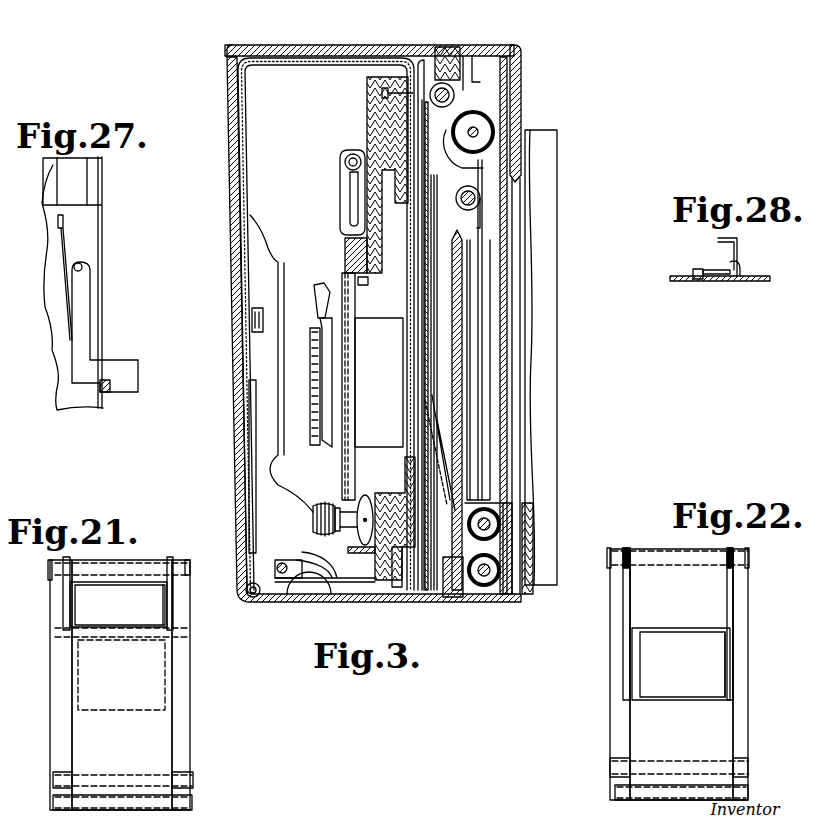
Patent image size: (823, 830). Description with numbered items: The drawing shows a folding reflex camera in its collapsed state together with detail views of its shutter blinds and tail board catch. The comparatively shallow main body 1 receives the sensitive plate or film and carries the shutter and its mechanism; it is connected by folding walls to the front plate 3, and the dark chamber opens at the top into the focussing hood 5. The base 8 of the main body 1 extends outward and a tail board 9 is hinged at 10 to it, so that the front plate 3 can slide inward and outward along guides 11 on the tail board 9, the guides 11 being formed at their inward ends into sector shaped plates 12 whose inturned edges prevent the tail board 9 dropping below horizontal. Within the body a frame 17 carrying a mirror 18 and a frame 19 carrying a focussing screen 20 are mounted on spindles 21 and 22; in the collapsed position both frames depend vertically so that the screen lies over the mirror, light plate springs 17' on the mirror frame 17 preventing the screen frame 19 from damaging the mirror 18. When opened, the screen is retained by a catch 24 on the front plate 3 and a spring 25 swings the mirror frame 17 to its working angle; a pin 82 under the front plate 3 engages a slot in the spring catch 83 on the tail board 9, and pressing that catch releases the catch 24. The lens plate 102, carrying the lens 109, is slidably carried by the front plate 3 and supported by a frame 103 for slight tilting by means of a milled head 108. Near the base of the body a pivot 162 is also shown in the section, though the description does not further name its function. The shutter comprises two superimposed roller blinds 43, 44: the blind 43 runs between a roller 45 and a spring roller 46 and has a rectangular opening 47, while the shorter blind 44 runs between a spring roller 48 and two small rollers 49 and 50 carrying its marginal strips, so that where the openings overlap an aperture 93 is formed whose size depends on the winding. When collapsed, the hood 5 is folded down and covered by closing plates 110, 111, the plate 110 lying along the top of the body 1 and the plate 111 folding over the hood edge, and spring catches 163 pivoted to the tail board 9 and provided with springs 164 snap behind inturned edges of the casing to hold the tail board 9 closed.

In FIG. 3, the main body 1 is at (503, 44).
In FIG. 3, the front plate 3 is at (367, 103).
In FIG. 3, the focussing hood 5 is at (250, 152).
In FIG. 3, the base 8 is at (347, 594).
In FIG. 3, the tail board 9 is at (245, 374).
In FIG. 27, the tail board 9 is at (62, 355).
In FIG. 28, the tail board 9 is at (697, 282).
In FIG. 3, the hinge 10 is at (244, 582).
In FIG. 3, the guides 11 is at (252, 302).
In FIG. 27, the guides 11 is at (102, 165).
In FIG. 28, the guides 11 is at (739, 248).
In FIG. 3, the sector shaped plates 12 is at (270, 520).
In FIG. 3, the mirror frame 17 is at (542, 330).
In FIG. 3, the light plate springs 17' is at (522, 452).
In FIG. 3, the mirror 18 is at (464, 278).
In FIG. 3, the screen frame 19 is at (443, 258).
In FIG. 3, the focussing screen 20 is at (445, 340).
In FIG. 3, the mirror spindle 21 is at (482, 195).
In FIG. 3, the screen spindle 22 is at (450, 96).
In FIG. 3, the catch 24 is at (385, 67).
In FIG. 3, the spring 25 is at (478, 212).
In FIG. 3, the roller blind 43 is at (497, 384).
In FIG. 21, the roller blind 43 is at (122, 685).
In FIG. 22, the roller blind 43 is at (681, 674).
In FIG. 3, the roller blind 44 is at (492, 372).
In FIG. 21, the roller blind 44 is at (56, 655).
In FIG. 22, the roller blind 44 is at (620, 697).
In FIG. 3, the roller 45 is at (483, 135).
In FIG. 21, the roller 45 is at (50, 567).
In FIG. 22, the roller 45 is at (630, 548).
In FIG. 3, the spring roller 46 is at (468, 586).
In FIG. 21, the spring roller 46 is at (53, 802).
In FIG. 22, the spring roller 46 is at (615, 792).
In FIG. 21, the rectangular opening 47 is at (122, 609).
In FIG. 22, the rectangular opening 47 is at (681, 664).
In FIG. 3, the spring roller 48 is at (511, 590).
In FIG. 21, the spring roller 48 is at (53, 776).
In FIG. 22, the spring roller 48 is at (610, 770).
In FIG. 21, the small roller 49 is at (188, 560).
In FIG. 22, the small roller 49 is at (749, 553).
In FIG. 21, the small roller 50 is at (50, 582).
In FIG. 22, the small roller 50 is at (608, 556).
In FIG. 3, the pin 82 is at (400, 588).
In FIG. 3, the spring catch 83 is at (256, 398).
In FIG. 21, the aperture 93 is at (152, 607).
In FIG. 22, the aperture 93 is at (710, 660).
In FIG. 3, the lens plate 102 is at (344, 272).
In FIG. 3, the frame 103 is at (345, 250).
In FIG. 3, the milled head 108 is at (313, 516).
In FIG. 3, the lens 109 is at (318, 338).
In FIG. 3, the closing plate 110 is at (352, 45).
In FIG. 3, the closing plate 111 is at (219, 58).
In FIG. 3, the pivot 162 is at (334, 600).
In FIG. 27, the catches 163 is at (124, 368).
In FIG. 28, the catches 163 is at (748, 282).
In FIG. 27, the springs 164 is at (66, 234).